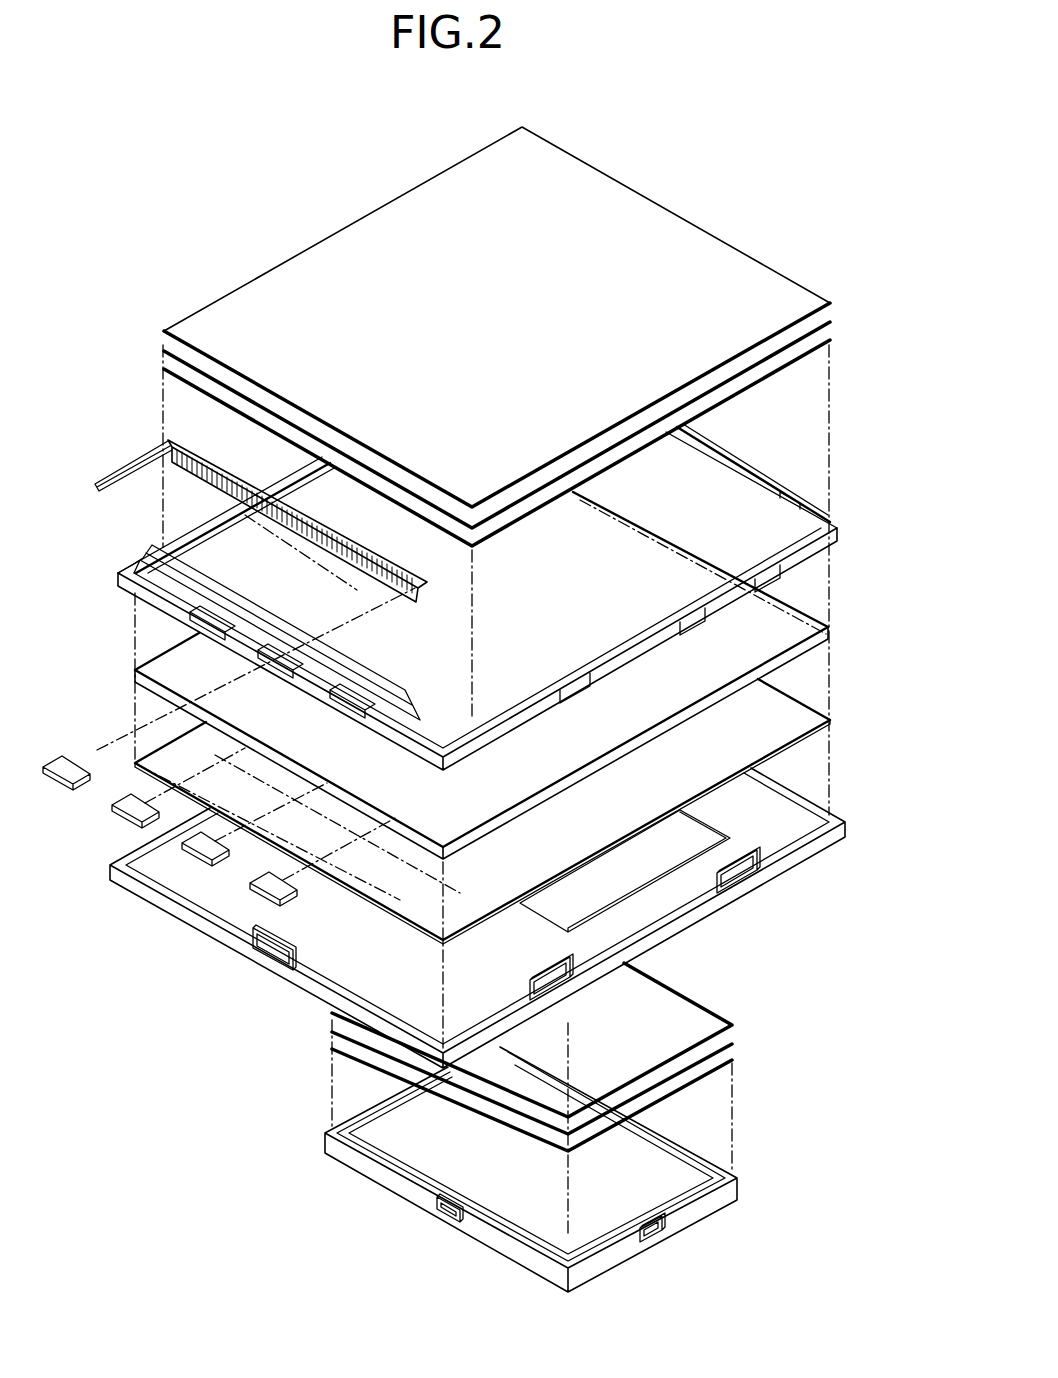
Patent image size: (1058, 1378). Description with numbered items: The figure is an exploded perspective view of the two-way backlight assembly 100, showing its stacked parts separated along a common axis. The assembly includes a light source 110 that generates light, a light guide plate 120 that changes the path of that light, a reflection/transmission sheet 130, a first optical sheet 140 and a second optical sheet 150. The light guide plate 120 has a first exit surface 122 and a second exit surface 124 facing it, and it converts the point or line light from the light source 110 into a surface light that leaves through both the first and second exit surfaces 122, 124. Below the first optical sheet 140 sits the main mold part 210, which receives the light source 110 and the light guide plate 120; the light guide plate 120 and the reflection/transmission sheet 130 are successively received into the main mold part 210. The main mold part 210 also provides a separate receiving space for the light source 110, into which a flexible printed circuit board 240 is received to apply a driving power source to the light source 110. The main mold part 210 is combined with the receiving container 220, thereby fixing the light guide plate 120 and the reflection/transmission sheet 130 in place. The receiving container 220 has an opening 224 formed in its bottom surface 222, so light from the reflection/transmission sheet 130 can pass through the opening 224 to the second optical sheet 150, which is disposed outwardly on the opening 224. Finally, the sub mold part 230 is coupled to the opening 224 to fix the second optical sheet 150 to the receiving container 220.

The two-way backlight assembly 100 is at (306, 206).
The light source 110 is at (205, 866).
The light guide plate 120 is at (517, 675).
The first exit surface 122 is at (780, 622).
The second exit surface 124 is at (793, 662).
The reflection/transmission sheet 130 is at (795, 727).
The first optical sheet 140 is at (838, 304).
The second optical sheet 150 is at (737, 1022).
The main mold part 210 is at (800, 497).
The receiving container 220 is at (504, 918).
The bottom surface 222 is at (345, 975).
The opening 224 is at (636, 868).
The sub mold part 230 is at (740, 1190).
The flexible printed circuit board 240 is at (408, 594).